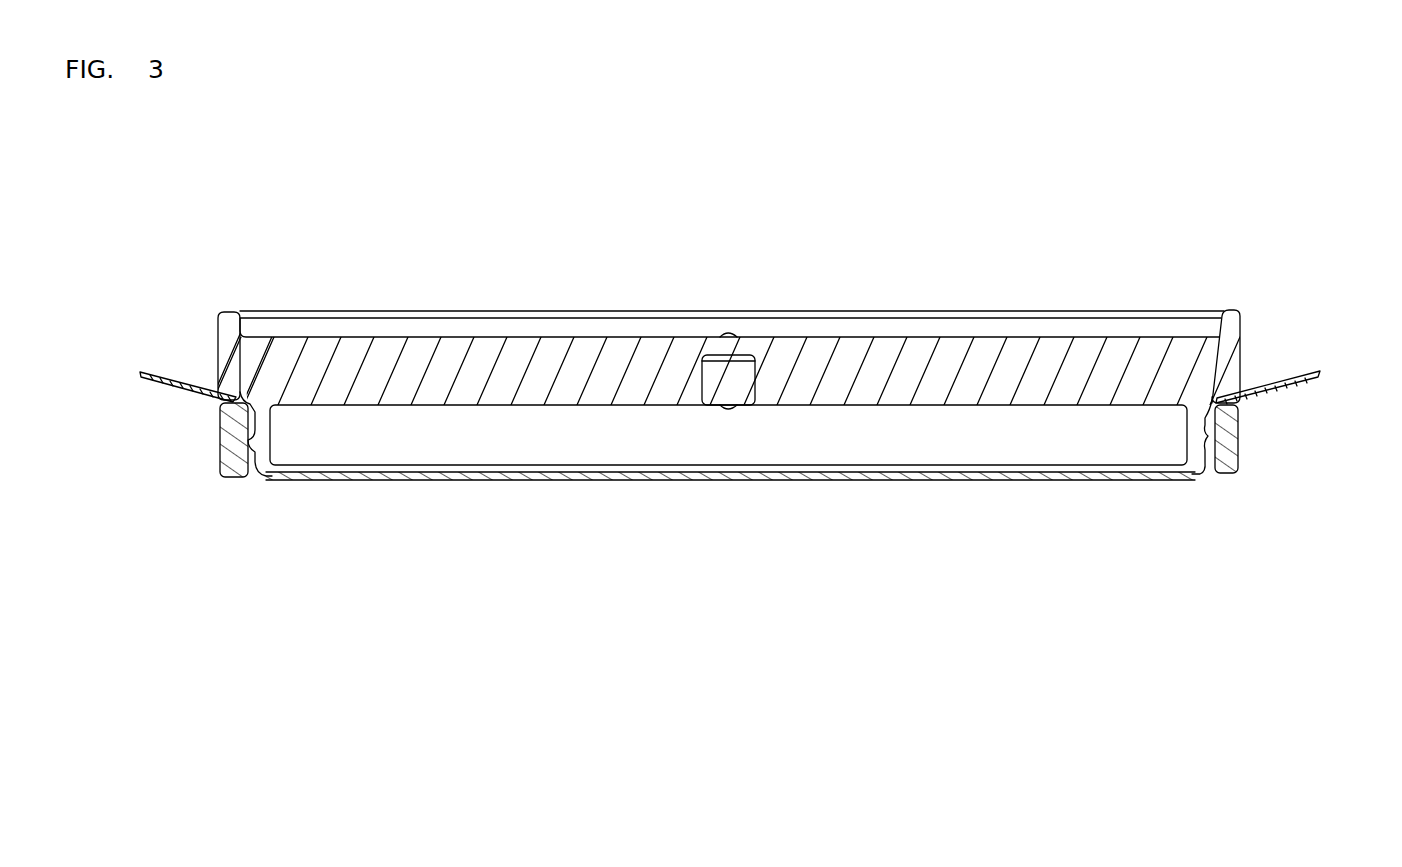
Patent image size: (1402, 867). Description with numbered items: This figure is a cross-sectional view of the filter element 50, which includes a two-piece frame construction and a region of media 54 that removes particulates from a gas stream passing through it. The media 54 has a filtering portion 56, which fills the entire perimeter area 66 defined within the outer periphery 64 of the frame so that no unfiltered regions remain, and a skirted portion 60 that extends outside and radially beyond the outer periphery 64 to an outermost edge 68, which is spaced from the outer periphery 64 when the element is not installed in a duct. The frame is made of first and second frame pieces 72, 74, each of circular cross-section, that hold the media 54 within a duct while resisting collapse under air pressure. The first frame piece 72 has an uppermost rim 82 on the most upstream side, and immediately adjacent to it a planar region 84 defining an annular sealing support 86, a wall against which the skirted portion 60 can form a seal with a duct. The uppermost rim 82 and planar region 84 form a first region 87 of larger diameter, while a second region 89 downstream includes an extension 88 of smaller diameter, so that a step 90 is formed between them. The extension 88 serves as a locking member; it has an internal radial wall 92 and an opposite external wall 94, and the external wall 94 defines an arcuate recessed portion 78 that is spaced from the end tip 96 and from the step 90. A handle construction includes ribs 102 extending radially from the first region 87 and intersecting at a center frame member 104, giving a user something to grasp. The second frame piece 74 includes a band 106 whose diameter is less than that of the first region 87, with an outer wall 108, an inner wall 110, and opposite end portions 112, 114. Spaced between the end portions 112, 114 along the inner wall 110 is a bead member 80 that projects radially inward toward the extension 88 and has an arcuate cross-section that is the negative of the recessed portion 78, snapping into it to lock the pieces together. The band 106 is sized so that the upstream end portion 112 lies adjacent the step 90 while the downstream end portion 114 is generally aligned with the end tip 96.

The filter element 50 is at (424, 228).
The media 54 is at (143, 400).
The filtering portion 56 is at (620, 483).
The skirted portion 60 is at (1310, 376).
The outer periphery 64 is at (1240, 462).
The perimeter area 66 is at (1133, 481).
The outermost edge 68 is at (1318, 372).
The first frame piece 72 is at (223, 312).
The second frame piece 74 is at (227, 472).
The recessed portion 78 is at (253, 437).
The bead member 80 is at (250, 440).
The uppermost rim 82 is at (1228, 312).
The planar region 84 is at (1242, 318).
The annular sealing support 86 is at (1242, 345).
The first region 87 is at (1318, 297).
The extension 88 is at (1193, 444).
The second region 89 is at (1145, 415).
The step 90 is at (238, 398).
The internal radial wall 92 is at (1190, 447).
The external wall 94 is at (1218, 413).
The end tip 96 is at (1200, 470).
The ribs 102 is at (980, 335).
The center frame member 104 is at (748, 406).
The band 106 is at (1223, 422).
The outer wall 108 is at (222, 427).
The inner wall 110 is at (250, 465).
The upstream end portion 112 is at (1228, 398).
The downstream end portion 114 is at (1228, 472).